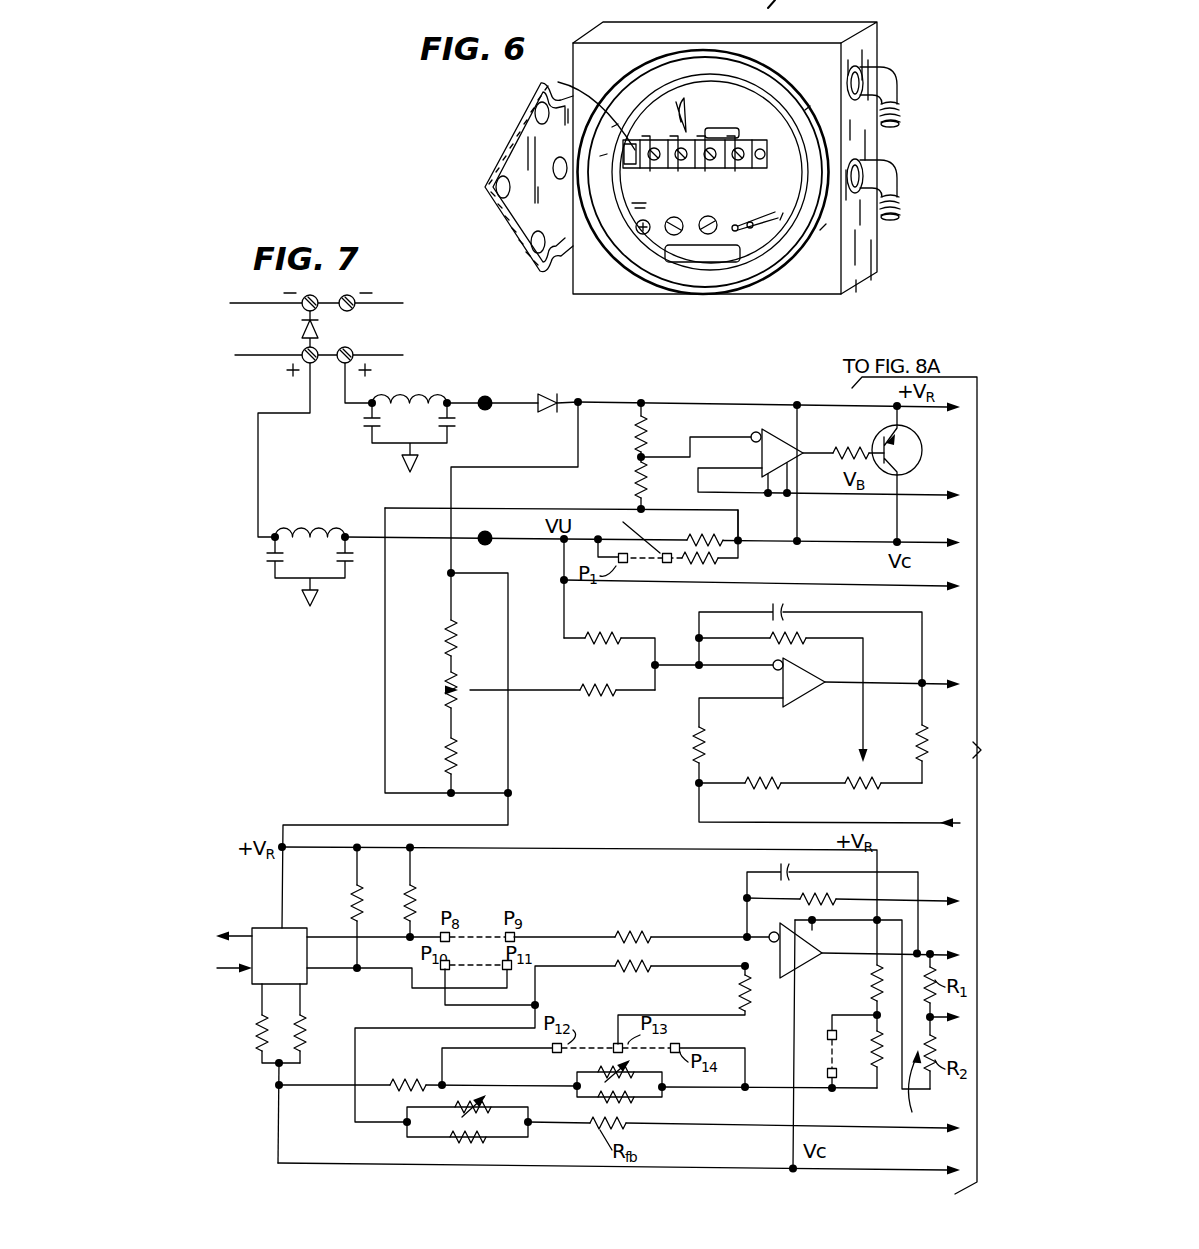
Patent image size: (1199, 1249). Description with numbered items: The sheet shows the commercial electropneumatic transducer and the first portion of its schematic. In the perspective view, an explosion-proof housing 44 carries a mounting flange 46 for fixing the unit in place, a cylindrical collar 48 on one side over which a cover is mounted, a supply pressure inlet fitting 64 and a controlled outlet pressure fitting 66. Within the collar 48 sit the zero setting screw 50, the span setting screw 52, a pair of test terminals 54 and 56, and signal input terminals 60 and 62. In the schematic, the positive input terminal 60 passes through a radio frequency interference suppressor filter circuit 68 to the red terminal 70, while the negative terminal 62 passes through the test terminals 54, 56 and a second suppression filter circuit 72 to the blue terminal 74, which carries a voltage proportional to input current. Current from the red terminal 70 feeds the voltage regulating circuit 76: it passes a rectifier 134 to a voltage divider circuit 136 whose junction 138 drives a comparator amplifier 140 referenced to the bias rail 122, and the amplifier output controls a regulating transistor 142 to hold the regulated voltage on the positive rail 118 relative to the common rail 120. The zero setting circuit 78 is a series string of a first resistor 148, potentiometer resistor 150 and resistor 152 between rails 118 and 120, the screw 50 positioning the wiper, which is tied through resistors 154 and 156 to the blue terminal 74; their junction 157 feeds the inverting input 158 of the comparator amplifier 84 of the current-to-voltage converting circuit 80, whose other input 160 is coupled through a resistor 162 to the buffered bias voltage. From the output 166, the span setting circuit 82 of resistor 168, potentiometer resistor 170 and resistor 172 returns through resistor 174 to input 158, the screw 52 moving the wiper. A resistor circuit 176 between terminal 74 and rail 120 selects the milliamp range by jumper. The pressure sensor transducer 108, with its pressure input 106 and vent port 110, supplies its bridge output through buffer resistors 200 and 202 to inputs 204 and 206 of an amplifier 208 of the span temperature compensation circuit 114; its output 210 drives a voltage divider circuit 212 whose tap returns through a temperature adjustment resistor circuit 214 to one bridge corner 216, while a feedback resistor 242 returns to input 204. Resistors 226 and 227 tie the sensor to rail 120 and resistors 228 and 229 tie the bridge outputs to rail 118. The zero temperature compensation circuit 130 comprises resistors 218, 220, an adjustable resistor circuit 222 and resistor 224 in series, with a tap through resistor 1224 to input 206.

In FIG. 6, the housing 44 is at (812, 32).
In FIG. 6, the mounting flange 46 is at (512, 160).
In FIG. 6, the cylindrical collar 48 is at (775, 228).
In FIG. 6, the zero setting screw 50 is at (667, 236).
In FIG. 7, the zero setting screw 50 is at (490, 704).
In FIG. 6, the span setting screw 52 is at (708, 236).
In FIG. 7, the span setting screw 52 is at (866, 750).
In FIG. 6, the test terminal 54 is at (716, 170).
In FIG. 7, the test terminal 54 is at (308, 294).
In FIG. 6, the test terminal 56 is at (745, 170).
In FIG. 7, the test terminal 56 is at (302, 347).
In FIG. 6, the positive signal input terminal 60 is at (635, 152).
In FIG. 7, the positive signal input terminal 60 is at (350, 348).
In FIG. 6, the negative signal input terminal 62 is at (684, 136).
In FIG. 7, the negative signal input terminal 62 is at (340, 297).
In FIG. 6, the supply pressure inlet fitting 64 is at (905, 114).
In FIG. 6, the controlled outlet pressure fitting 66 is at (905, 194).
In FIG. 7, the radio frequency interference suppressor filter circuit 68 is at (430, 436).
In FIG. 7, the red terminal 70 is at (496, 384).
In FIG. 7, the radio frequency interference suppression filter circuit 72 is at (330, 572).
In FIG. 7, the blue terminal 74 is at (490, 546).
In FIG. 7, the voltage regulating circuit 76 is at (830, 500).
In FIG. 7, the zero setting circuit 78 is at (378, 728).
In FIG. 7, the current-to-voltage converting circuit 80 is at (853, 720).
In FIG. 7, the span setting circuit 82 is at (883, 817).
In FIG. 7, the comparator amplifier 84 is at (806, 672).
In FIG. 7, the input of pressure sensor transducer 106 is at (232, 972).
In FIG. 7, the pressure sensor transducer 108 is at (266, 930).
In FIG. 7, the vent port 110 is at (240, 928).
In FIG. 7, the span temperature compensation circuit 114 is at (798, 1009).
In FIG. 7, the positive voltage rail 118 is at (850, 404).
In FIG. 7, the common voltage rail 120 is at (818, 546).
In FIG. 7, the bias voltage rail 122 is at (816, 473).
In FIG. 7, the zero temperature compensation circuit 130 is at (716, 1074).
In FIG. 7, the rectifier 134 is at (550, 414).
In FIG. 7, the voltage divider circuit 136 is at (648, 432).
In FIG. 7, the junction 138 is at (635, 466).
In FIG. 7, the comparator amplifier 140 is at (780, 430).
In FIG. 7, the regulating transistor 142 is at (912, 446).
In FIG. 7, the first resistor 148 is at (445, 644).
In FIG. 7, the potentiometer resistor 150 is at (446, 706).
In FIG. 7, the resistor 152 is at (445, 770).
In FIG. 7, the resistor 154 is at (590, 684).
In FIG. 7, the resistor 156 is at (594, 632).
In FIG. 7, the junction 157 is at (654, 668).
In FIG. 7, the inverting input 158 is at (772, 662).
In FIG. 7, the other input 160 is at (740, 700).
In FIG. 7, the resistor 162 is at (692, 756).
In FIG. 7, the output 166 is at (905, 676).
In FIG. 7, the resistor 168 is at (927, 742).
In FIG. 7, the potentiometer resistor 170 is at (870, 790).
In FIG. 7, the resistor 172 is at (758, 782).
In FIG. 7, the resistor 174 is at (800, 642).
In FIG. 7, the resistor circuit 176 is at (702, 538).
In FIG. 7, the buffer resistor 200 is at (636, 928).
In FIG. 7, the buffer resistor 202 is at (630, 976).
In FIG. 7, the input 204 is at (768, 936).
In FIG. 7, the input 206 is at (760, 966).
In FIG. 7, the amplifier 208 is at (848, 1040).
In FIG. 7, the output 210 is at (925, 948).
In FIG. 7, the voltage divider circuit 212 is at (935, 1086).
In FIG. 7, the temperature adjustment resistor circuit 214 is at (482, 1142).
In FIG. 7, the corner 216 is at (360, 972).
In FIG. 7, the resistor 218 is at (872, 988).
In FIG. 7, the resistor 220 is at (880, 1050).
In FIG. 7, the adjustable resistor circuit 222 is at (585, 1070).
In FIG. 7, the resistor 224 is at (408, 1080).
In FIG. 7, the resistor 226 is at (258, 1032).
In FIG. 7, the resistor 227 is at (305, 1036).
In FIG. 7, the resistor 228 is at (352, 896).
In FIG. 7, the resistor 229 is at (417, 894).
In FIG. 7, the feedback resistor 242 is at (816, 896).
In FIG. 7, the resistor 1224 is at (738, 990).